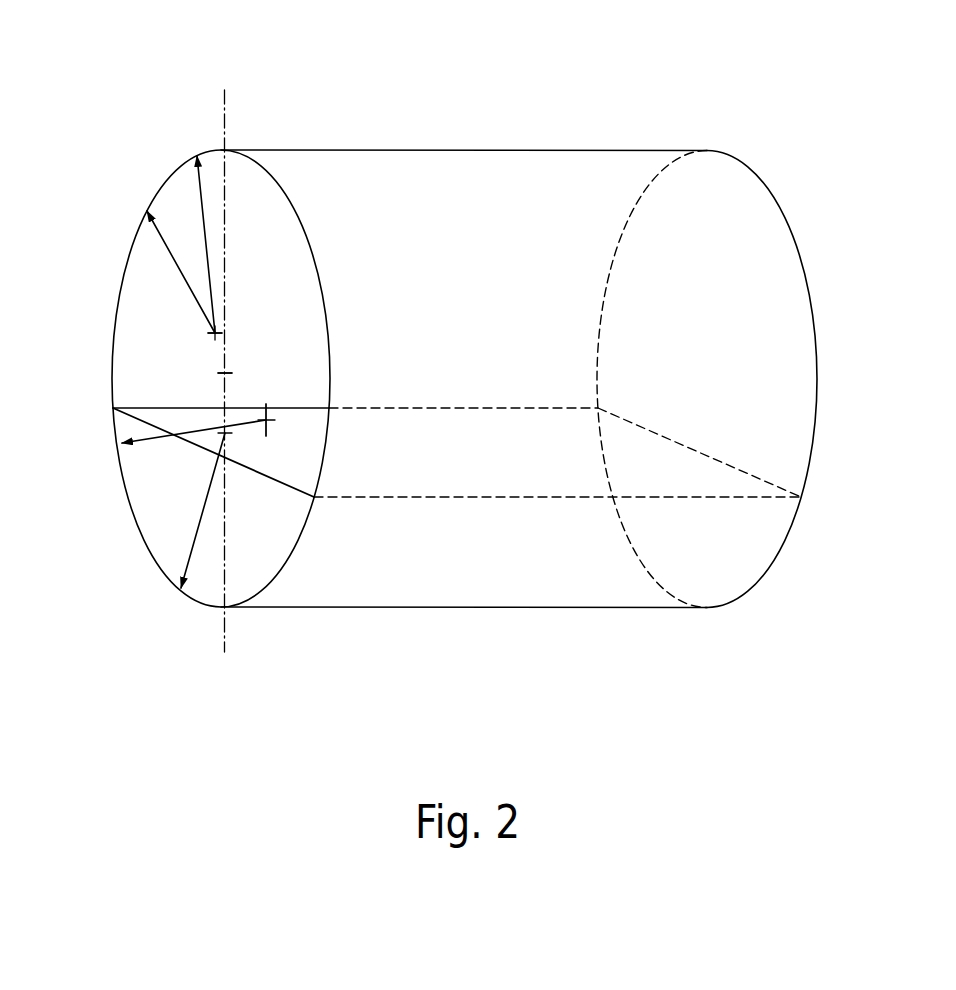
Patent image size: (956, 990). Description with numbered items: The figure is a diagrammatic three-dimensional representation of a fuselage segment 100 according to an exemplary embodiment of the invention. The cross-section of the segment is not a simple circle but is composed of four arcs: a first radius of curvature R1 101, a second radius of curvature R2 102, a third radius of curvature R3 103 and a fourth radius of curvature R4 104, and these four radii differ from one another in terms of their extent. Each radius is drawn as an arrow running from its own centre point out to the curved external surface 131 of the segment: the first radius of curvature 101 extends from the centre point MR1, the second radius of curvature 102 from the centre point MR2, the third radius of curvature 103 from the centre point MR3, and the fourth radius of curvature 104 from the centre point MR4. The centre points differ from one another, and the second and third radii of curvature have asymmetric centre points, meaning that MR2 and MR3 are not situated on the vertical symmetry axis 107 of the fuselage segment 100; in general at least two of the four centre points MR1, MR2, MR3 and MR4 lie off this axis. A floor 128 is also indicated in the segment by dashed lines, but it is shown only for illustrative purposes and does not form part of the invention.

The fuselage segment 100 is at (577, 95).
The first radius of curvature R1 101 is at (210, 243).
The second radius of curvature R2 102 is at (197, 302).
The third radius of curvature R3 103 is at (140, 433).
The fourth radius of curvature R4 104 is at (187, 548).
The symmetry axis 107 is at (226, 122).
The floor 128 is at (242, 467).
The curved external surface 131 is at (542, 645).
The centre point of the first radius of curvature MR1 is at (228, 368).
The centre point of the second radius of curvature MR2 is at (212, 336).
The centre point of the third radius of curvature MR3 is at (268, 425).
The centre point of the fourth radius of curvature MR4 is at (225, 434).